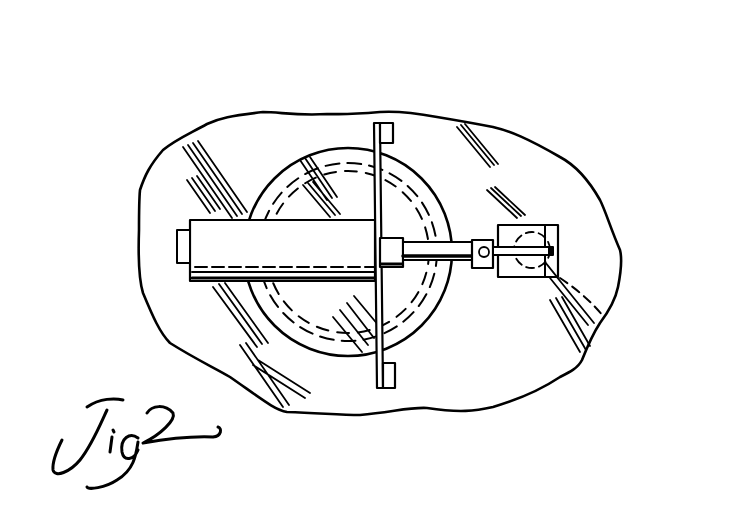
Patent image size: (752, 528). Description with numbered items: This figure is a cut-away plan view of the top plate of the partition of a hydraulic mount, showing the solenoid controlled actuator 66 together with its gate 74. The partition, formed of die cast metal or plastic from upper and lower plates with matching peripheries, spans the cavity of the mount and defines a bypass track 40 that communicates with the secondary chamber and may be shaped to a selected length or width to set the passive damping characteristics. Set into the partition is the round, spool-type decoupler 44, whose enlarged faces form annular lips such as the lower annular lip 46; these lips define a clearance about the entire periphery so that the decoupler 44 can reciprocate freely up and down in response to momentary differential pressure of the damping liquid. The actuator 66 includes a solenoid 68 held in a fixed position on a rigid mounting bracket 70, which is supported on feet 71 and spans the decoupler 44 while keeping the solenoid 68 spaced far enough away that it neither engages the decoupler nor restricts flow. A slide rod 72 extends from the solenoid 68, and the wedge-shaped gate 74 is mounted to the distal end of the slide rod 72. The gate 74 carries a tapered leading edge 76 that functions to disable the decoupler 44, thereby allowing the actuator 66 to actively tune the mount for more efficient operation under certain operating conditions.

The bypass track 40 is at (600, 320).
The decoupler 44 is at (330, 157).
The annular lip 46 is at (422, 190).
The solenoid controlled actuator 66 is at (228, 143).
The solenoid 68 is at (294, 254).
The mounting bracket 70 is at (426, 185).
The feet 71 is at (177, 250).
The slide rod 72 is at (442, 238).
The gate 74 is at (517, 233).
The tapered leading edge 76 is at (507, 278).